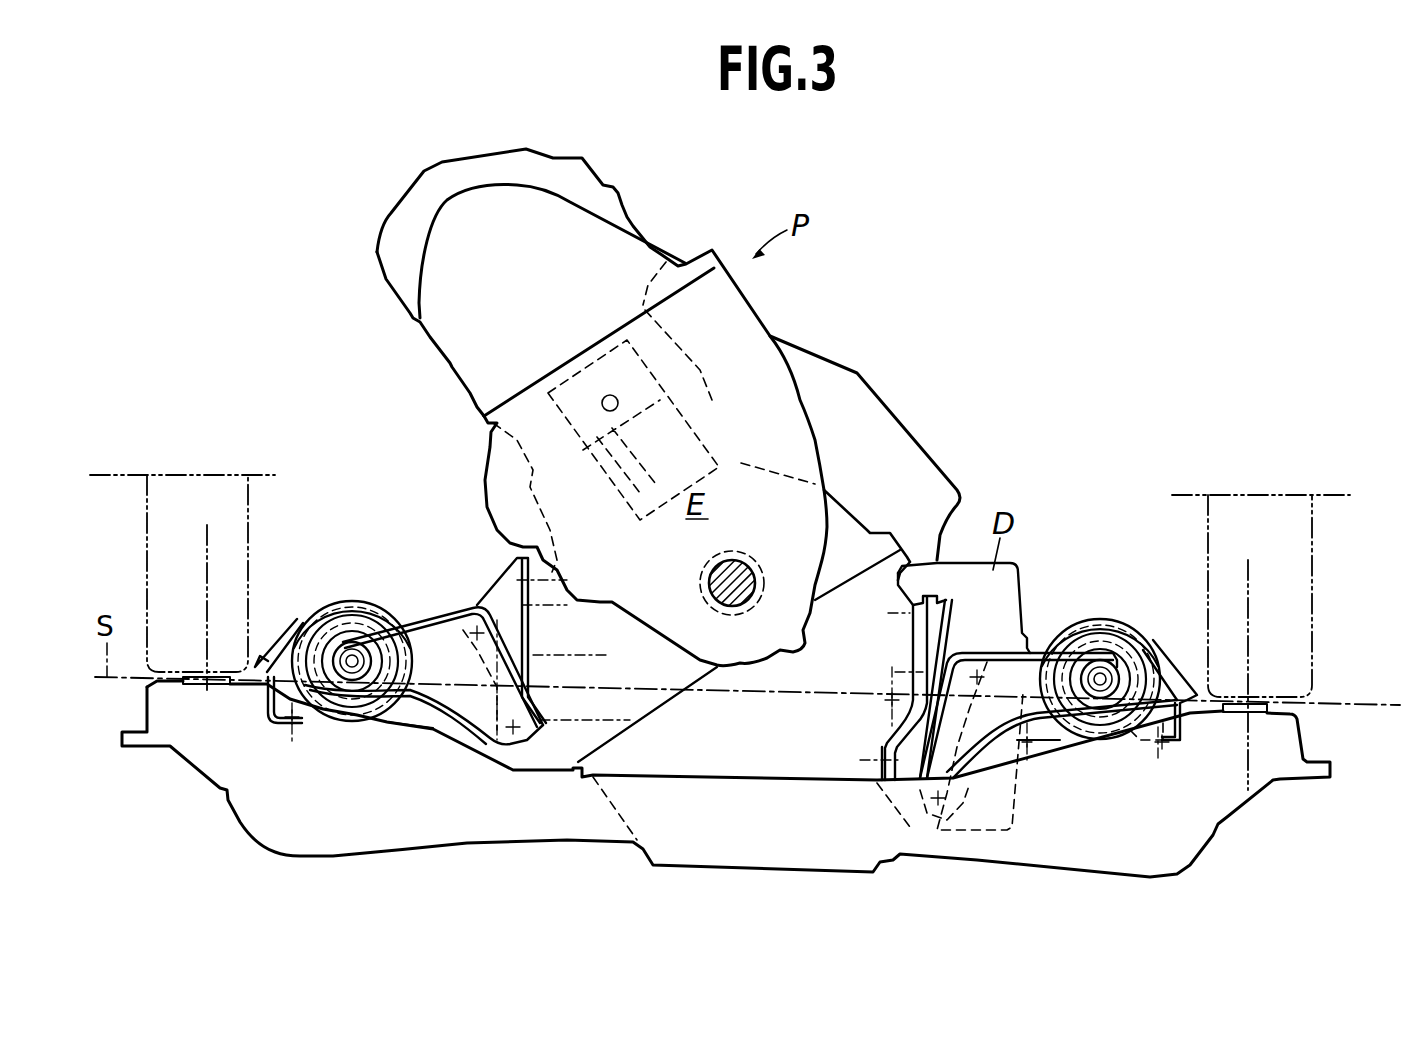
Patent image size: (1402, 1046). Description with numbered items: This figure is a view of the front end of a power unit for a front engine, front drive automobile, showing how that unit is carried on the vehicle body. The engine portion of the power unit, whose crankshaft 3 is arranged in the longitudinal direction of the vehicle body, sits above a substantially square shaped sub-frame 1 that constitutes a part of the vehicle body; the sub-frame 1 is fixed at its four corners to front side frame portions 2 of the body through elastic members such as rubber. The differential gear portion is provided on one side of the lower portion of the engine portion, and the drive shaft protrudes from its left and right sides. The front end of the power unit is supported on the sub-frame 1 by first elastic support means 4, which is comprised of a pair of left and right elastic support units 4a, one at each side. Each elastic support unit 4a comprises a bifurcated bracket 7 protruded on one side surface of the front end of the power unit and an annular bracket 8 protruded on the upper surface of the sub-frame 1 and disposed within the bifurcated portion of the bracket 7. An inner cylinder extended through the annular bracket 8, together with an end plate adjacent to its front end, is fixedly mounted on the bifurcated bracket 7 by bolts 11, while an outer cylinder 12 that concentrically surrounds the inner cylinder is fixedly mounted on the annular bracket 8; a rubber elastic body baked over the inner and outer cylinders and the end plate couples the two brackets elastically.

The sub-frame 1 is at (467, 835).
The front side frame portions 2 is at (248, 517).
The crankshaft 3 is at (748, 565).
The first elastic support means 4 is at (368, 583).
The elastic support unit 4a is at (394, 587).
The bifurcated bracket 7 is at (430, 637).
The annular bracket 8 is at (290, 650).
The bolts 11 is at (353, 685).
The outer cylinder 12 is at (327, 627).